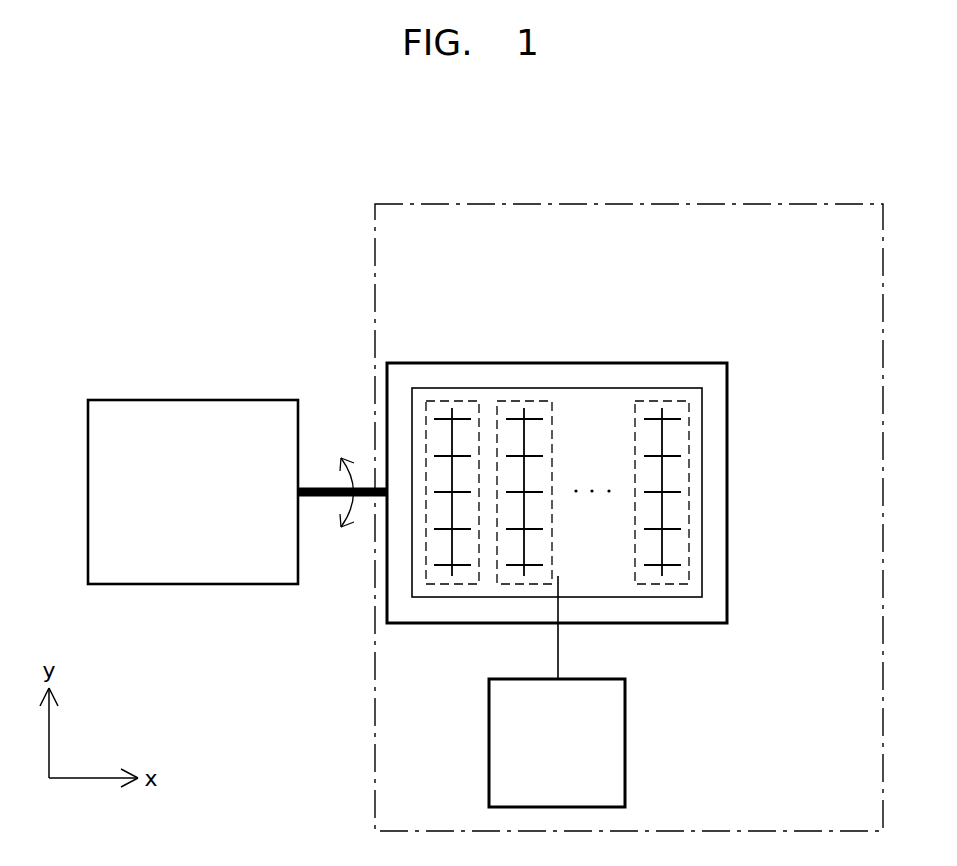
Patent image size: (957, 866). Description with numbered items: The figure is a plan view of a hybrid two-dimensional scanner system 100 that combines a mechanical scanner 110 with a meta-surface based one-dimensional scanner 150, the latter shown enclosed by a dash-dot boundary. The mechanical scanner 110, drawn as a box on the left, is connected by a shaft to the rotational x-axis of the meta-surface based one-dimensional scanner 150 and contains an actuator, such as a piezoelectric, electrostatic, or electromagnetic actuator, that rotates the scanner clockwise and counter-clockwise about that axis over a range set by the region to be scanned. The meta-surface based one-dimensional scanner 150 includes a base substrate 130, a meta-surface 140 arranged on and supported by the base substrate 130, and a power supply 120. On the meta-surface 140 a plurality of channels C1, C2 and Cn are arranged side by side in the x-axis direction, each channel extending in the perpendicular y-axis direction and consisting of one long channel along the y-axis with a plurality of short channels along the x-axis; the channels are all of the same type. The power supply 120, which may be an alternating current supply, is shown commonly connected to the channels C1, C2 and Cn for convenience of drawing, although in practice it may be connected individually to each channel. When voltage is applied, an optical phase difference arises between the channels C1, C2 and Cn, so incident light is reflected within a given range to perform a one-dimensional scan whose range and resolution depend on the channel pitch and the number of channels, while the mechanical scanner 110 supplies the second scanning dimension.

The hybrid 2D scanner system 100 is at (322, 807).
The mechanical scanner 110 is at (193, 399).
The power supply 120 is at (618, 742).
The base substrate 130 is at (727, 420).
The meta-surface 140 is at (702, 492).
The meta-surface based 1D scanner 150 is at (628, 204).
The channel C1 is at (457, 399).
The channel C2 is at (529, 399).
The channel Cn is at (667, 399).